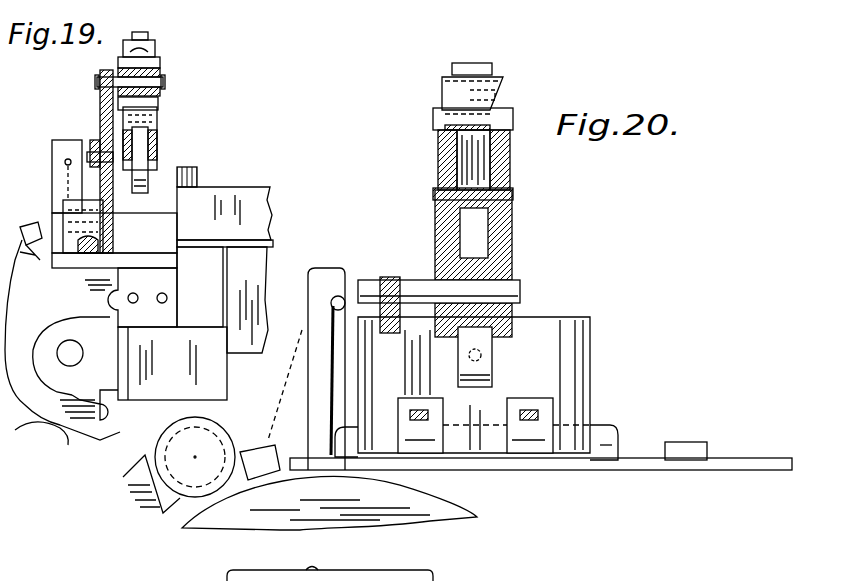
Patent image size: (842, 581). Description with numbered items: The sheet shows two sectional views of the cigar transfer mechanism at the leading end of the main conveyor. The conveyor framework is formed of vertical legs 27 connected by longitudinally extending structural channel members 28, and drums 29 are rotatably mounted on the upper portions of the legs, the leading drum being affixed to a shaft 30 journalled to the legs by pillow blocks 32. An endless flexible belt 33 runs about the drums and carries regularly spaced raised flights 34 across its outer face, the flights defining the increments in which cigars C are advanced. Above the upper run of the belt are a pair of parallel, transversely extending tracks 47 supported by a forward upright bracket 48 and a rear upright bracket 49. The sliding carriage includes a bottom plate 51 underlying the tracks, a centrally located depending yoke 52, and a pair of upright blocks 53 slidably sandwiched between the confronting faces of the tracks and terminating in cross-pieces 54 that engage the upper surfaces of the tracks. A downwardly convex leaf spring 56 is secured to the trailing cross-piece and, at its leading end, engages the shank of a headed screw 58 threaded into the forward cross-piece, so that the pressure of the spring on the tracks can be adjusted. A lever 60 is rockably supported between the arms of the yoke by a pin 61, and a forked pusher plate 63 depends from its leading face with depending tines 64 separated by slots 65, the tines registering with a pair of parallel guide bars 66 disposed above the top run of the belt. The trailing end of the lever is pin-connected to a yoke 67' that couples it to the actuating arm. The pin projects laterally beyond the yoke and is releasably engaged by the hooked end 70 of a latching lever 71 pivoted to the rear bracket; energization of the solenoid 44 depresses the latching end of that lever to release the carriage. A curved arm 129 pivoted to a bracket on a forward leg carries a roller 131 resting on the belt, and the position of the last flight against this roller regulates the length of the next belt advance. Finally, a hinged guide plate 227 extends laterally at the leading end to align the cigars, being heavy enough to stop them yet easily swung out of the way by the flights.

In FIG. 19, the vertical legs 27 is at (185, 367).
In FIG. 19, the structural channel members 28 is at (262, 241).
In FIG. 19, the drums 29 is at (45, 415).
In FIG. 19, the shaft 30 is at (68, 355).
In FIG. 19, the pillow blocks 32 is at (30, 426).
In FIG. 20, the endless flexible belt 33 is at (740, 458).
In FIG. 19, the flights 34 is at (30, 236).
In FIG. 20, the flights 34 is at (695, 446).
In FIG. 19, the solenoid 44 is at (35, 258).
In FIG. 19, the tracks 47 is at (118, 63).
In FIG. 20, the tracks 47 is at (440, 142).
In FIG. 19, the forward upright bracket 48 is at (424, 573).
In FIG. 19, the rear upright bracket 49 is at (100, 195).
In FIG. 19, the bottom plate 51 is at (158, 103).
In FIG. 20, the bottom plate 51 is at (488, 213).
In FIG. 20, the yoke 52 is at (512, 252).
In FIG. 20, the upright blocks 53 is at (470, 150).
In FIG. 19, the cross-pieces 54 is at (158, 61).
In FIG. 20, the cross-pieces 54 is at (510, 120).
In FIG. 19, the leaf spring 56 is at (148, 47).
In FIG. 20, the leaf spring 56 is at (497, 82).
In FIG. 19, the headed screw 58 is at (134, 32).
In FIG. 20, the headed screw 58 is at (462, 63).
In FIG. 20, the lever 60 is at (458, 353).
In FIG. 20, the pin 61 is at (418, 280).
In FIG. 19, the forked pusher plate 63 is at (190, 172).
In FIG. 20, the forked pusher plate 63 is at (575, 355).
In FIG. 20, the tines 64 is at (340, 446).
In FIG. 20, the slots 65 is at (418, 402).
In FIG. 20, the guide bars 66 is at (410, 415).
In FIG. 19, the yoke 67' is at (176, 147).
In FIG. 20, the hooked end 70 is at (386, 332).
In FIG. 19, the latching lever 71 is at (92, 140).
In FIG. 19, the curved arm 129 is at (150, 493).
In FIG. 19, the roller 131 is at (158, 512).
In FIG. 19, the guide plate 227 is at (64, 163).
In FIG. 20, the guide plate 227 is at (295, 369).
In FIG. 20, the cigars C is at (612, 442).